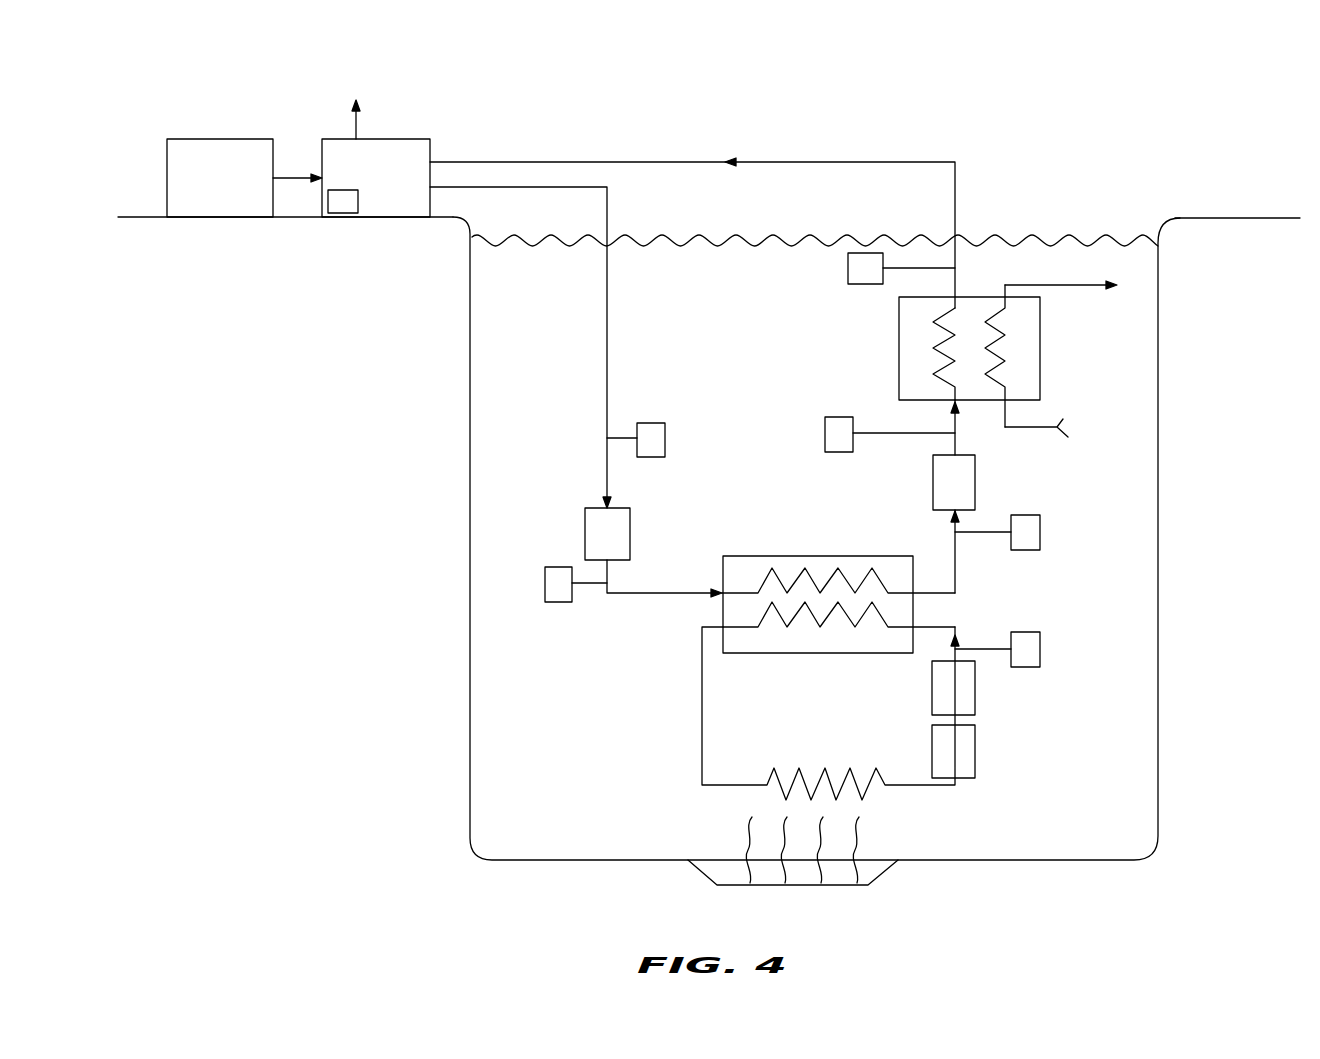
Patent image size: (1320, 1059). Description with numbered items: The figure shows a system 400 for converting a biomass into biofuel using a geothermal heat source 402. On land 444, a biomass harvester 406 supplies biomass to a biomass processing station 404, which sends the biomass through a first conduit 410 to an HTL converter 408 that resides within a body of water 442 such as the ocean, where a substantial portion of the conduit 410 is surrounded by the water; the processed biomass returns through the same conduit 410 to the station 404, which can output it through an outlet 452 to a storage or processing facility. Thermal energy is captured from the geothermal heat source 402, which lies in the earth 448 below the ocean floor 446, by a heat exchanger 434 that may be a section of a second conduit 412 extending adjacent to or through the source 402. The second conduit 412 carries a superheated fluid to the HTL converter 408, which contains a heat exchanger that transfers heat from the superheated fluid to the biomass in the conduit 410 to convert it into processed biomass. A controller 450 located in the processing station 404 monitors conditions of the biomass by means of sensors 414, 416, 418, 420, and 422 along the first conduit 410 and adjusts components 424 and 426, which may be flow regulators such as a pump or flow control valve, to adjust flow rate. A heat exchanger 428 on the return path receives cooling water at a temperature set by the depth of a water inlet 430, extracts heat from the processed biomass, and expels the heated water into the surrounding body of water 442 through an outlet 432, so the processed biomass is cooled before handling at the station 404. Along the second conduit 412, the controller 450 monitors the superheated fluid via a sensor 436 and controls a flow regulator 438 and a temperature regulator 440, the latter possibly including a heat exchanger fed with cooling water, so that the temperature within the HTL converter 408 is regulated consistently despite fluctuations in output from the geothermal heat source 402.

The system 400 is at (136, 90).
The geothermal heat source 402 is at (880, 893).
The biomass processing station 404 is at (412, 139).
The biomass harvester 406 is at (224, 139).
The HTL converter 408 is at (855, 556).
The first conduit 410 is at (819, 150).
The second conduit 412 is at (702, 713).
The sensor 414 is at (660, 423).
The sensor 416 is at (553, 602).
The sensor 418 is at (1040, 531).
The sensor 420 is at (825, 433).
The sensor 422 is at (848, 273).
The flow regulator 424 is at (630, 533).
The flow regulator 426 is at (975, 477).
The heat exchanger 428 is at (1040, 349).
The water inlet 430 is at (1045, 416).
The outlet 432 is at (1076, 289).
The heat exchanger 434 is at (732, 810).
The sensor 436 is at (1040, 643).
The flow regulator 438 is at (975, 700).
The temperature regulator 440 is at (975, 750).
The body of water 442 is at (535, 296).
The land 444 is at (358, 272).
The ocean floor 446 is at (1032, 850).
The earth 448 is at (595, 889).
The controller 450 is at (352, 190).
The outlet 452 is at (357, 107).